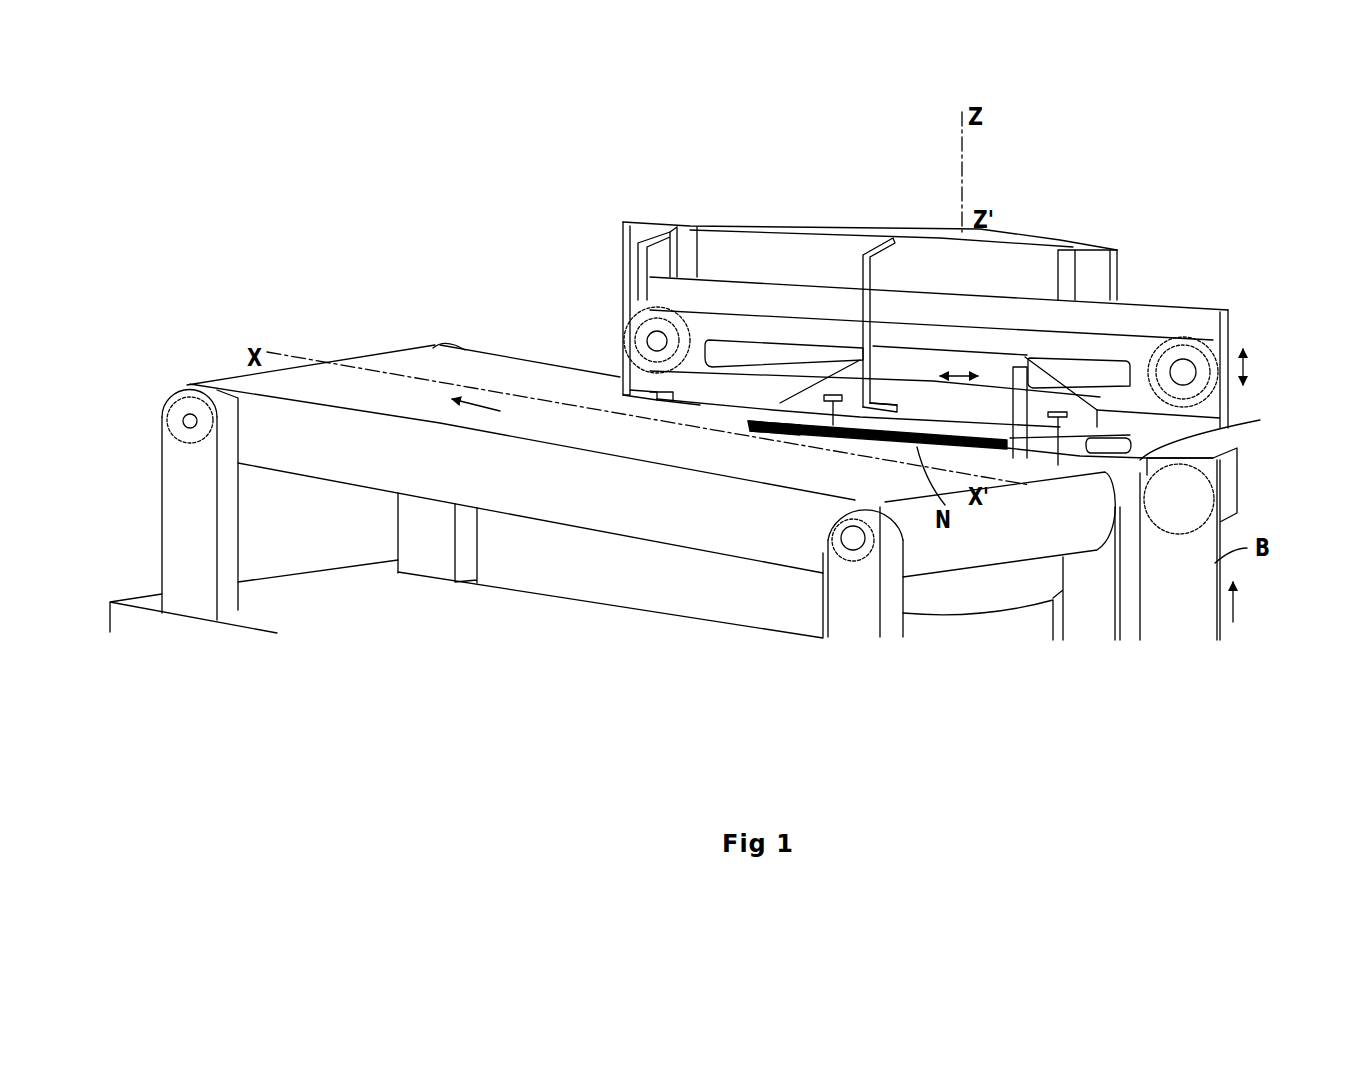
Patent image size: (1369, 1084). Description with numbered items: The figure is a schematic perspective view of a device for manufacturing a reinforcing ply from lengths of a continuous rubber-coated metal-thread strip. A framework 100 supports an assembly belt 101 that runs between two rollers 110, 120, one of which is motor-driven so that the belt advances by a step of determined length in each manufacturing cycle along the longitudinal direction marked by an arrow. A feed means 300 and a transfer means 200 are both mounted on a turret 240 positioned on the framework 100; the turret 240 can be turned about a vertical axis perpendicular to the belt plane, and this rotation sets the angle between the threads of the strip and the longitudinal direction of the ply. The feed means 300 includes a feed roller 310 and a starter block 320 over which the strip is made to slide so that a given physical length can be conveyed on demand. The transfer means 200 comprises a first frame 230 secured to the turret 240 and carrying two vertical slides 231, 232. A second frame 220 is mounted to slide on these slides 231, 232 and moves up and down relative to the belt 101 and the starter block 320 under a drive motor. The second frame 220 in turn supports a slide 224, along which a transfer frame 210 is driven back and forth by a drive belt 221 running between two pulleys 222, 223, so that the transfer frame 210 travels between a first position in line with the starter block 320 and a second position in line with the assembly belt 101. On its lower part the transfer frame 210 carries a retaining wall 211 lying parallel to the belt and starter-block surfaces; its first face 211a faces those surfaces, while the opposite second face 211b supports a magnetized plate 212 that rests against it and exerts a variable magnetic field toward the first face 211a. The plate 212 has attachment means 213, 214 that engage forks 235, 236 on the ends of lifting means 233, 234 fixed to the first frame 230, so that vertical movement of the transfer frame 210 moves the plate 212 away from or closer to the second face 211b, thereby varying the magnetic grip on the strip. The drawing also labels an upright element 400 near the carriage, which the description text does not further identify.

The framework 100 is at (190, 585).
The assembly belt 101 is at (420, 377).
The roller 110 is at (182, 425).
The roller 120 is at (850, 552).
The transfer means 200 is at (1130, 223).
The transfer frame 210 is at (963, 400).
The retaining wall 211 is at (760, 420).
The first face 211a is at (760, 413).
The second face 211b is at (780, 412).
The magnetized plate 212 is at (660, 395).
The attachment means 213 is at (830, 407).
The attachment means 214 is at (1057, 422).
The second frame 220 is at (633, 297).
The drive belt 221 is at (753, 310).
The pulley 222 is at (1193, 367).
The pulley 223 is at (648, 343).
The slide 224 is at (802, 353).
The first frame 230 is at (983, 273).
The slide 231 is at (690, 243).
The slide 232 is at (1065, 263).
The lifting means 233 is at (657, 243).
The lifting means 234 is at (883, 255).
The fork 235 is at (668, 394).
The fork 236 is at (893, 412).
The turret 240 is at (997, 600).
The feed means 300 is at (1270, 465).
The feed roller 310 is at (1188, 497).
The starter block 320 is at (1137, 472).
The stop post 400 is at (1020, 383).